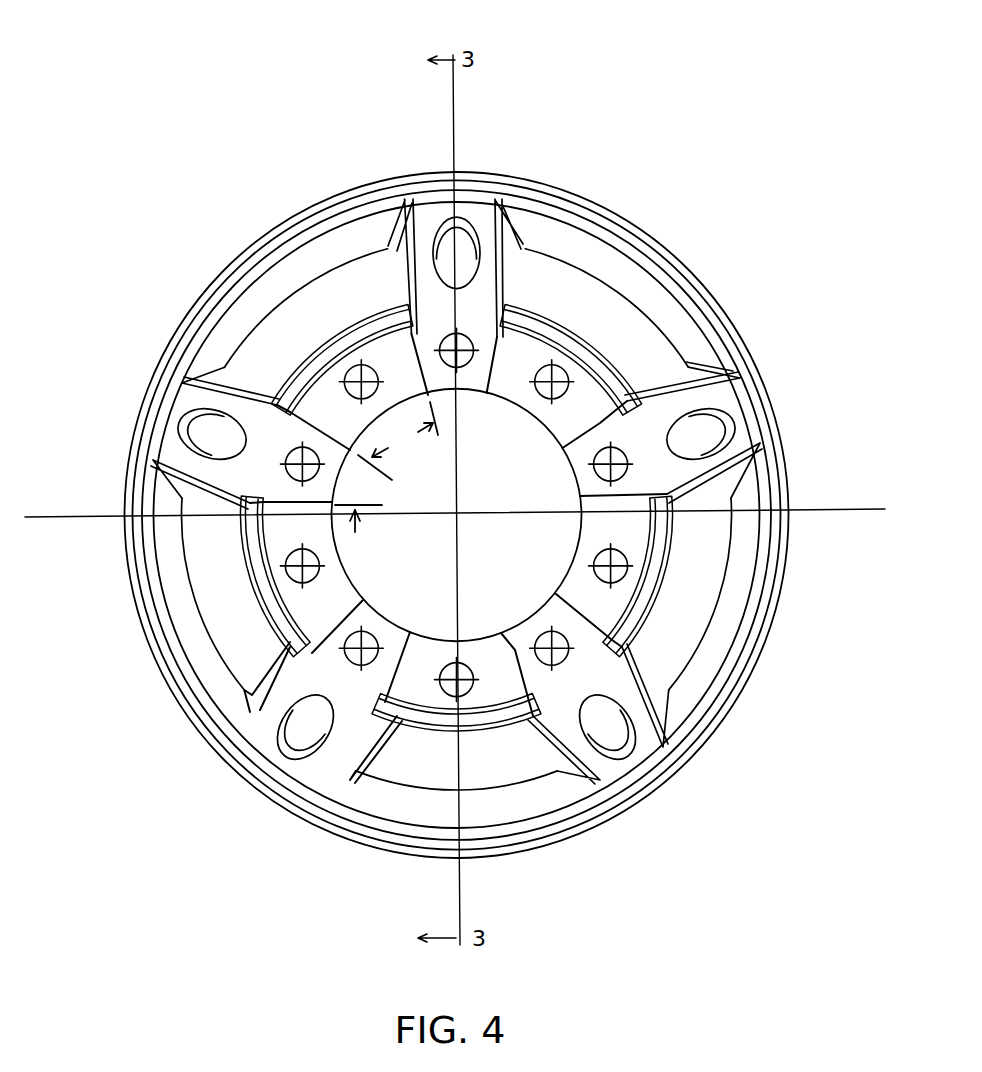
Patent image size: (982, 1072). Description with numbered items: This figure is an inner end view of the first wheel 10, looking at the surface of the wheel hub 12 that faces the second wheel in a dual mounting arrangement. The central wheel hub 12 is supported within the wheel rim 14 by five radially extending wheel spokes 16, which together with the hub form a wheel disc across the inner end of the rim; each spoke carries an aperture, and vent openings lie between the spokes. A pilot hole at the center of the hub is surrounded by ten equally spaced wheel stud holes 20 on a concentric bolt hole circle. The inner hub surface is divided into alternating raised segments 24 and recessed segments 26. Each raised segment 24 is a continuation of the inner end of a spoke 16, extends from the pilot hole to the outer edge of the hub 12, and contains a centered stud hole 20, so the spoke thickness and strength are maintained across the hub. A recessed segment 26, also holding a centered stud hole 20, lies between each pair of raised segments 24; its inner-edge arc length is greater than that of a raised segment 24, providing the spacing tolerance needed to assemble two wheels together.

The first wheel 10 is at (680, 209).
The wheel hub 12 is at (352, 568).
The wheel rim 14 is at (338, 194).
The wheel spokes 16 is at (461, 209).
The wheel stud holes 20 is at (462, 338).
The raised segments 24 is at (467, 380).
The recessed segments 26 is at (548, 422).